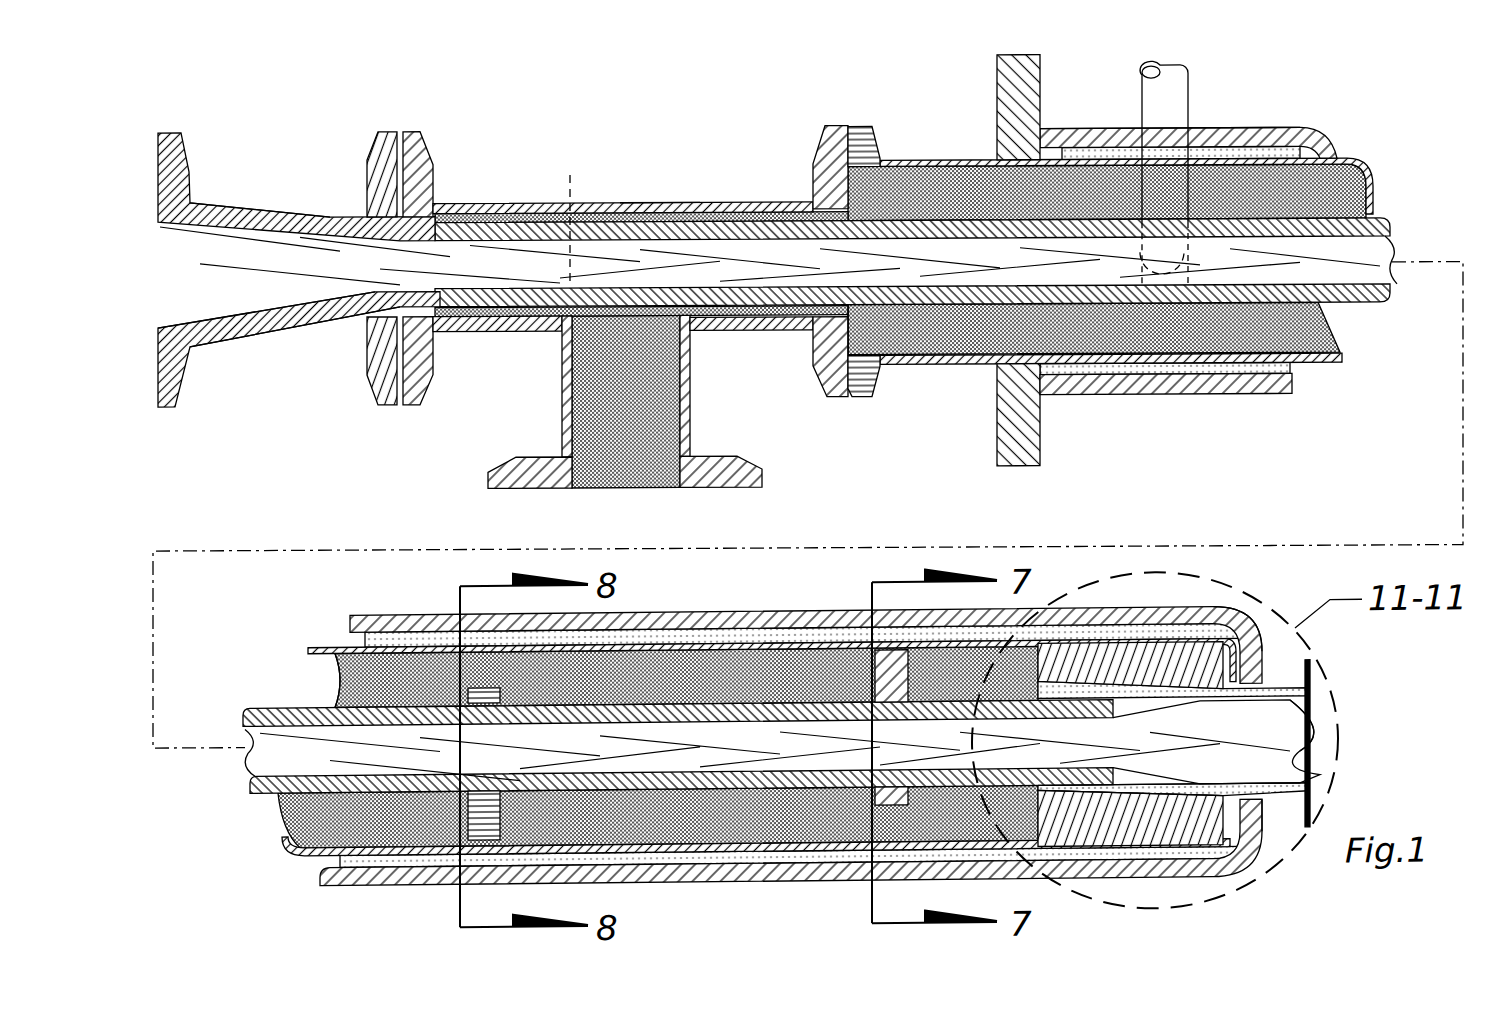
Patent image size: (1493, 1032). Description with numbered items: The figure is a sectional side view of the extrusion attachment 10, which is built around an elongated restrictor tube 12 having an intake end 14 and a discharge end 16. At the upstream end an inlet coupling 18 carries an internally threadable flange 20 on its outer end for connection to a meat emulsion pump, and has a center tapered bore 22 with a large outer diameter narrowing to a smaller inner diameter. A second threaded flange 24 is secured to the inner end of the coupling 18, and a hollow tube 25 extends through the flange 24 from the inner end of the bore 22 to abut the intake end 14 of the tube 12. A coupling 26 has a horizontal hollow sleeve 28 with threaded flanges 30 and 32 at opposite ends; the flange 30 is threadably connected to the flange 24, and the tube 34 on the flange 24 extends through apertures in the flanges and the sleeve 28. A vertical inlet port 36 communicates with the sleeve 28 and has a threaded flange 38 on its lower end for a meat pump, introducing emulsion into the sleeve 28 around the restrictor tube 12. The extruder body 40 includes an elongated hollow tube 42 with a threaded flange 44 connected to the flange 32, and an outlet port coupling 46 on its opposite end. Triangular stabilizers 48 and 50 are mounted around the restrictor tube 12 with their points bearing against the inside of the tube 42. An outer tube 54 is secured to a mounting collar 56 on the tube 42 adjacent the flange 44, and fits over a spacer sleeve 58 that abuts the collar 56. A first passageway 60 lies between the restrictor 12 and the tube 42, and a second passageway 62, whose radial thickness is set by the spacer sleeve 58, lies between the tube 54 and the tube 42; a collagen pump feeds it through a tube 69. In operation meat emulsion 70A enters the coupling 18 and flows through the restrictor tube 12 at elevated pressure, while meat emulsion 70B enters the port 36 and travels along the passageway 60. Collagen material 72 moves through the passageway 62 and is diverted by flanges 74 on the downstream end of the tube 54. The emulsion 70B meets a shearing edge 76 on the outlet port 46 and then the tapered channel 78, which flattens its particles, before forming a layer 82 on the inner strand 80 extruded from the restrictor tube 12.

The extrusion attachment 10 is at (188, 103).
The restrictor tube 12 is at (1395, 225).
The intake end 14 is at (572, 262).
The discharge end 16 is at (1125, 920).
The inlet coupling 18 is at (255, 192).
The internally threadable flange 20 is at (183, 143).
The center tapered bore 22 is at (233, 315).
The second threaded flange 24 is at (375, 147).
The hollow tube 25 is at (497, 222).
The coupling 26 is at (668, 196).
The horizontal hollow sleeve 28 is at (705, 208).
The threaded flange 30 is at (433, 165).
The threaded flange 32 is at (820, 132).
The tube 34 is at (500, 320).
The vertical inlet port 36 is at (690, 410).
The threaded flange 38 is at (740, 460).
The extruder body 40 is at (1328, 112).
The elongated hollow tube 42 is at (1375, 172).
The threaded flange 44 is at (870, 130).
The outlet port coupling 46 is at (1115, 660).
The triangular shaped stabilizer 48 is at (473, 850).
The triangular shaped stabilizer 50 is at (878, 655).
The outer tube 54 is at (1325, 136).
The mounting collar 56 is at (997, 72).
The spacer sleeve 58 is at (1150, 380).
The first passageway 60 is at (955, 345).
The second passageway 62 is at (1218, 152).
The tube 69 is at (1188, 72).
The meat emulsion 70A is at (325, 292).
The meat emulsion 70B is at (990, 195).
The collagen material 72 is at (1125, 152).
The flanges 74 is at (1290, 646).
The shearing edge 76 is at (1028, 792).
The tapered channel 78 is at (1062, 796).
The inner strand 80 is at (1332, 722).
The layer 82 is at (1275, 845).